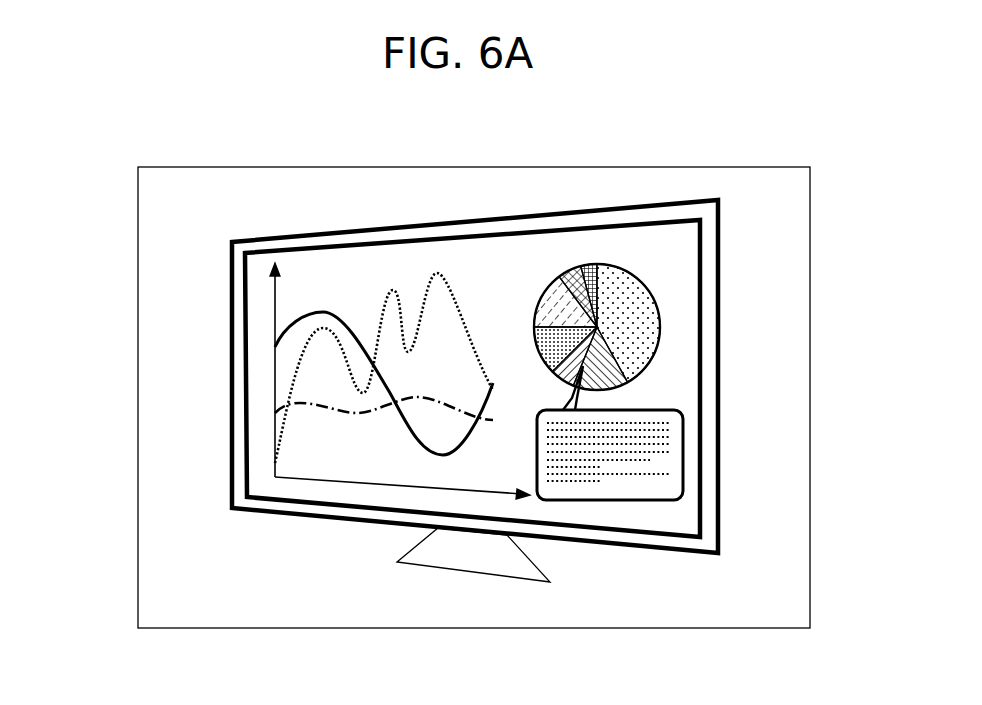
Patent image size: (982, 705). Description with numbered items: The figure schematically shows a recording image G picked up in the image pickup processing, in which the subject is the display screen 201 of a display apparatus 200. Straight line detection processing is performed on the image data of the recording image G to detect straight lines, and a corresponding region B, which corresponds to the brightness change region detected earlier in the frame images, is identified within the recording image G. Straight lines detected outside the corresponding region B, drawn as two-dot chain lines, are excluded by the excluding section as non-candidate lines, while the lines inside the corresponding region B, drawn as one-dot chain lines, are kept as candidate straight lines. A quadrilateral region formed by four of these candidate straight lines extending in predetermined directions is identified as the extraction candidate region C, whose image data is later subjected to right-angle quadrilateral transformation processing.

The recording image G is at (487, 121).
The display apparatus 200 is at (608, 200).
The display screen 201 is at (466, 401).
The corresponding region B is at (670, 238).
The extraction candidate region C is at (702, 232).